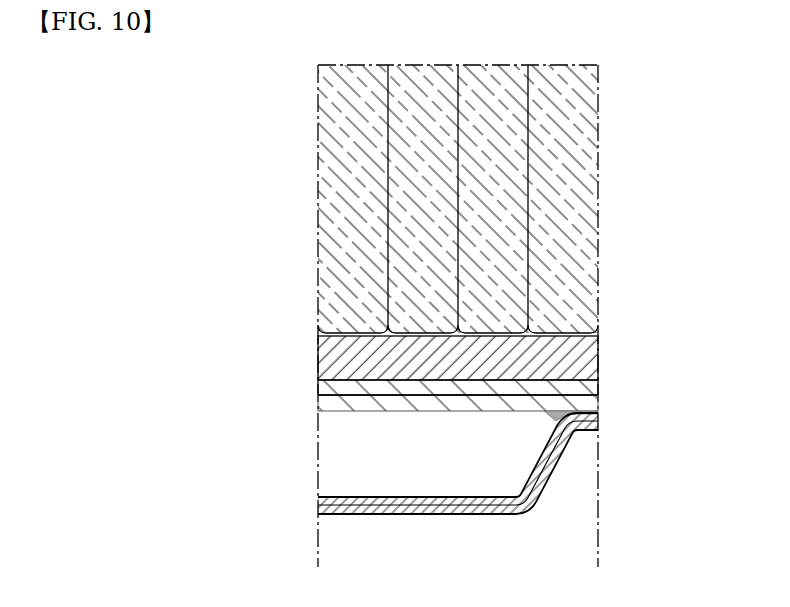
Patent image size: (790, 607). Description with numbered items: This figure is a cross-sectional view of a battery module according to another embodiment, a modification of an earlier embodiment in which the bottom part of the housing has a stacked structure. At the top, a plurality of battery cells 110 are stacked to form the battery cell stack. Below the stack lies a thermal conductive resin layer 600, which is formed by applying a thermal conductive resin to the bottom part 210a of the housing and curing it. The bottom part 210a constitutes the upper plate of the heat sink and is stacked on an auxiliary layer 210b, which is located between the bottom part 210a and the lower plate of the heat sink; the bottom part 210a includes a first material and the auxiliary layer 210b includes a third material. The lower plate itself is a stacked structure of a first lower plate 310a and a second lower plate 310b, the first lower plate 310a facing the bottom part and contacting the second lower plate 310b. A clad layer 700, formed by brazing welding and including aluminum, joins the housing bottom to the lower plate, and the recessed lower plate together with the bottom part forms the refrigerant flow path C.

The battery cell 110 is at (567, 205).
The thermal conductive resin layer 600 is at (338, 357).
The bottom part 210a is at (589, 388).
The auxiliary layer 210b is at (592, 403).
The first lower plate 310a is at (590, 417).
The second lower plate 310b is at (592, 427).
The clad layer 700 is at (547, 416).
The refrigerant flow path C is at (372, 465).